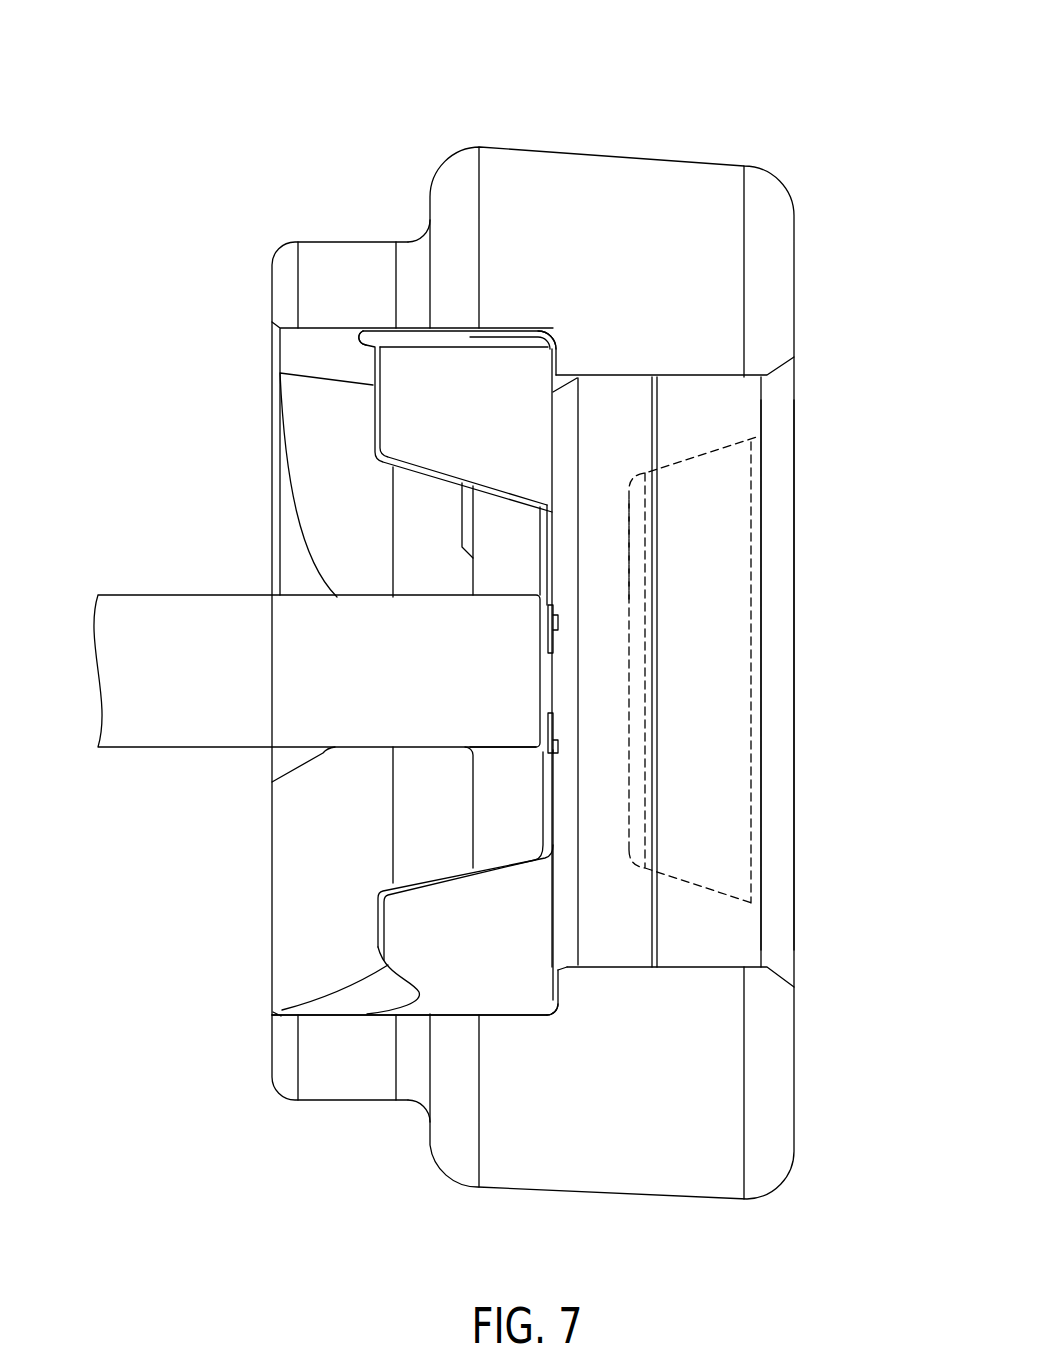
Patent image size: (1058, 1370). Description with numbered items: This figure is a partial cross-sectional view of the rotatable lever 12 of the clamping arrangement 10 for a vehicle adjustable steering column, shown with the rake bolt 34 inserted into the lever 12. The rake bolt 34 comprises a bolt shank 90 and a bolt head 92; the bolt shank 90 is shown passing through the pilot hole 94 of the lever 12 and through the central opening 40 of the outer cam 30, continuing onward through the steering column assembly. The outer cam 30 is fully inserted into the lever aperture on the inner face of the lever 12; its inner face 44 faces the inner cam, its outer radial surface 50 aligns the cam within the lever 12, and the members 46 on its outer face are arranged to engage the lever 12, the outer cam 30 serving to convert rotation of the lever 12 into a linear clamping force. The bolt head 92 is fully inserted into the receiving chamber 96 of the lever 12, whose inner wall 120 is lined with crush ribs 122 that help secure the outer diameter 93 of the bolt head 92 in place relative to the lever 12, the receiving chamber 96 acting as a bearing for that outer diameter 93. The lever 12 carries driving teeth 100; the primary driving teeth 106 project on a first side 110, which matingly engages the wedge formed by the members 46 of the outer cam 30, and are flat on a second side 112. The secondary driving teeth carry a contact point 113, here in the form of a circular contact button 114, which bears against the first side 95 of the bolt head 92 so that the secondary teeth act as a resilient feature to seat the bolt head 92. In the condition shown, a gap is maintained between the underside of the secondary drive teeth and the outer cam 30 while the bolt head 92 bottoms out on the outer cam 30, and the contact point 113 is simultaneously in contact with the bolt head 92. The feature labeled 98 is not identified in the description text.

The clamping arrangement 10 is at (553, 100).
The rotatable lever 12 is at (622, 158).
The outer cam 30 is at (248, 476).
The rake bolt 34 is at (120, 765).
The central opening 40 is at (350, 750).
The inner face 44 is at (272, 825).
The member 46 is at (428, 500).
The outer radial surface 50 is at (335, 355).
The bolt shank 90 is at (113, 680).
The bolt head 92 is at (762, 605).
The outer diameter 93 is at (717, 798).
The pilot hole 94 is at (523, 748).
The first side 95 is at (637, 503).
The receiving chamber 96 is at (828, 910).
The slot 98 is at (580, 980).
The driving teeth 100 is at (512, 325).
The primary driving teeth 106 is at (418, 358).
The first side 110 is at (362, 410).
The second side 112 is at (568, 361).
The contact point 113 is at (565, 633).
The contact button 114 is at (560, 617).
The inner wall 120 is at (793, 672).
The crush ribs 122 is at (762, 495).